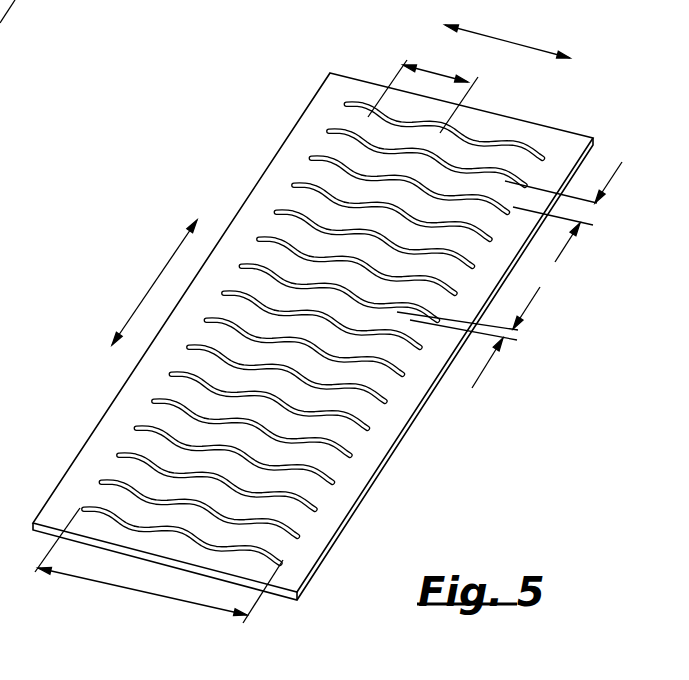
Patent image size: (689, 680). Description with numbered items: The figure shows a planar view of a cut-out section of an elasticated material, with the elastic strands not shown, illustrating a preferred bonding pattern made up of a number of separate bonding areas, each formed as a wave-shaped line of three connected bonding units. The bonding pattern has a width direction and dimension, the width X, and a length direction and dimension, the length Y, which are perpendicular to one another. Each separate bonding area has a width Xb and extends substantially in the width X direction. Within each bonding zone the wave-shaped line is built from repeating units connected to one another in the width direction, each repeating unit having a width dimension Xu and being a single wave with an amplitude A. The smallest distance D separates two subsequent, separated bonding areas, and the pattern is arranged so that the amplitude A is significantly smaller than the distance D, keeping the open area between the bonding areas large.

The width X is at (507, 35).
The width dimension of repeating unit Xu is at (423, 86).
The length Y is at (154, 282).
The smallest distance D is at (563, 212).
The amplitude A is at (468, 337).
The width of bonding area Xb is at (159, 567).